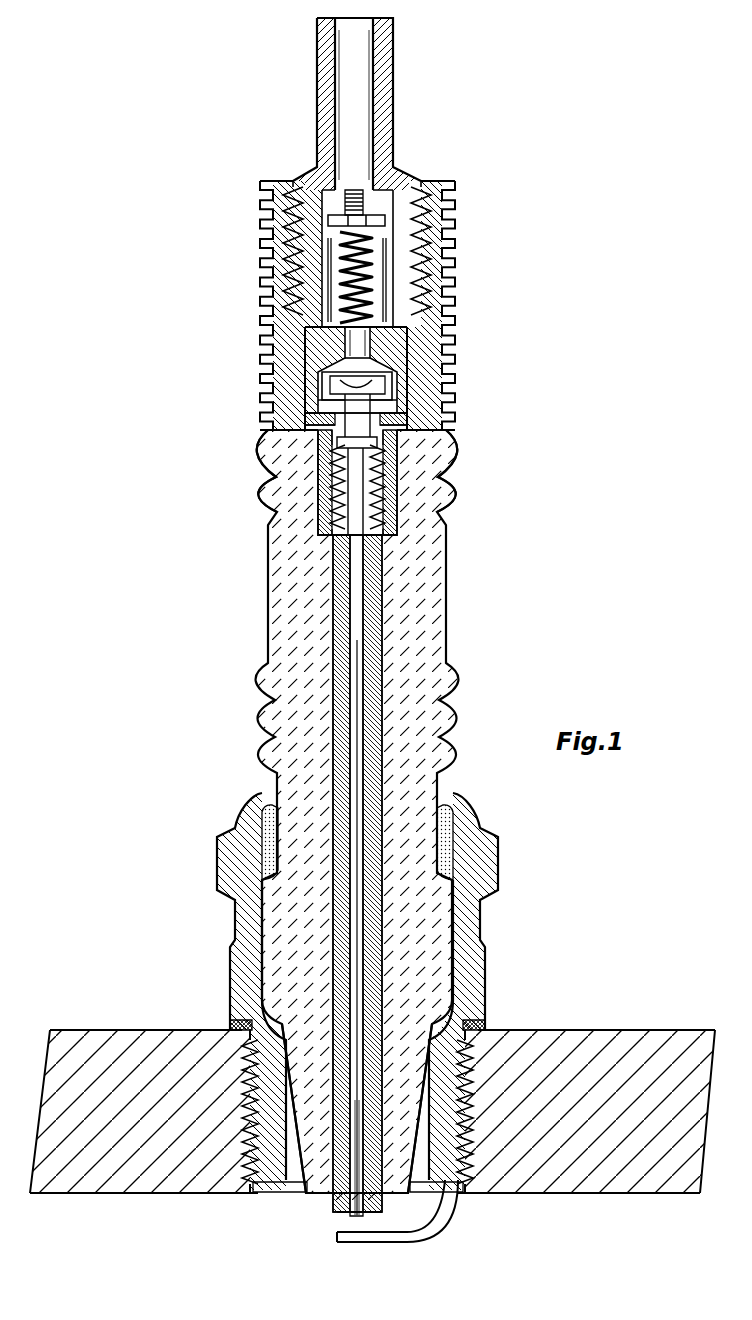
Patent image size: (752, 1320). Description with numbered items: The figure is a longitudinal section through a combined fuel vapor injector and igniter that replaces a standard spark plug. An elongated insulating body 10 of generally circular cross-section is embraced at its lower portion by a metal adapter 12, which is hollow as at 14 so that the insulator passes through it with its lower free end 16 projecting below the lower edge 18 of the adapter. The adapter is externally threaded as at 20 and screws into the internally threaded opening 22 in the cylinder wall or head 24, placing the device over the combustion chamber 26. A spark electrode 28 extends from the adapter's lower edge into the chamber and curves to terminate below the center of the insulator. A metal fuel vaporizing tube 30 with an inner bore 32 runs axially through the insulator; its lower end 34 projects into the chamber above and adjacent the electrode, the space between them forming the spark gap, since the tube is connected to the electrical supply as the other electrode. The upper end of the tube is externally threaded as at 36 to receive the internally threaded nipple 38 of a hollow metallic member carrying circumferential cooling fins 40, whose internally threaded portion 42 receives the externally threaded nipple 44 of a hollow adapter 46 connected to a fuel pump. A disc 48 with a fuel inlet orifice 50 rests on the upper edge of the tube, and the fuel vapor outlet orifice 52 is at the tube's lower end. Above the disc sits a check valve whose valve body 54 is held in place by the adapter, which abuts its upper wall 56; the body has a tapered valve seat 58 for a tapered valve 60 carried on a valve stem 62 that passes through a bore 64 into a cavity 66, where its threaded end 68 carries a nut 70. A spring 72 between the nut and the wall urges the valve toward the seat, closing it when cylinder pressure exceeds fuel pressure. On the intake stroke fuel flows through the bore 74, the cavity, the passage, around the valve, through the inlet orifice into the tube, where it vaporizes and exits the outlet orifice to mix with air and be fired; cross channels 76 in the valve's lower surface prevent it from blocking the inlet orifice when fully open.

The insulating body 10 is at (447, 537).
The metal adapter 12 is at (499, 885).
The hollow of adapter 14 is at (430, 1185).
The lower free end of insulator 16 is at (320, 1210).
The lower edge of adapter 18 is at (270, 1198).
The external threads of adapter 20 is at (500, 1030).
The internally threaded opening 22 is at (460, 1196).
The cylinder wall or head 24 is at (82, 1195).
The combustion chamber 26 is at (116, 1257).
The spark electrode 28 is at (352, 1244).
The fuel vaporizing tube 30 is at (382, 613).
The inner bore of tube 32 is at (362, 657).
The lower end of tube 34 is at (340, 1215).
The external threads of tube 36 is at (410, 467).
The internally threaded nipple 38 is at (323, 475).
The cooling fins 40 is at (261, 240).
The internally threaded portion 42 is at (414, 188).
The externally threaded nipple 44 is at (400, 182).
The hollow adapter 46 is at (394, 75).
The orifice disc 48 is at (317, 413).
The fuel inlet orifice 50 is at (365, 425).
The fuel vapor outlet orifice 52 is at (360, 1214).
The valve body 54 is at (407, 392).
The upper wall of valve body 56 is at (395, 338).
The tapered valve seat 58 is at (380, 360).
The tapered valve 60 is at (347, 367).
The valve stem 62 is at (352, 340).
The bore of valve body 64 is at (345, 352).
The cavity 66 is at (378, 250).
The threaded end of stem 68 is at (347, 192).
The nut 70 is at (343, 215).
The spring 72 is at (367, 270).
The bore of adapter 74 is at (353, 55).
The cross channels 76 is at (353, 382).